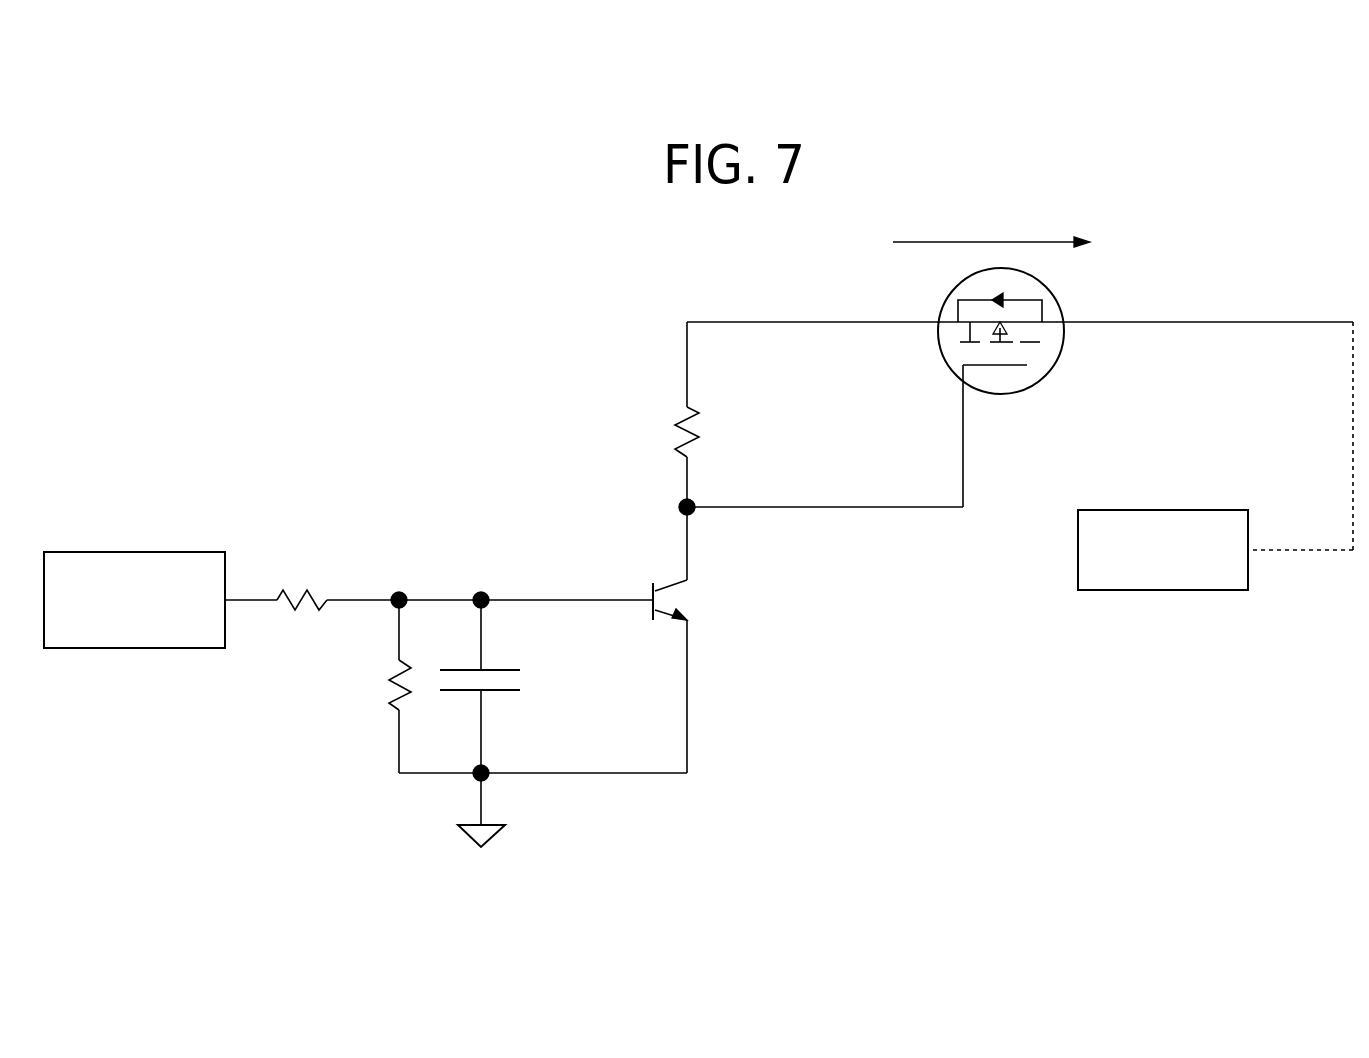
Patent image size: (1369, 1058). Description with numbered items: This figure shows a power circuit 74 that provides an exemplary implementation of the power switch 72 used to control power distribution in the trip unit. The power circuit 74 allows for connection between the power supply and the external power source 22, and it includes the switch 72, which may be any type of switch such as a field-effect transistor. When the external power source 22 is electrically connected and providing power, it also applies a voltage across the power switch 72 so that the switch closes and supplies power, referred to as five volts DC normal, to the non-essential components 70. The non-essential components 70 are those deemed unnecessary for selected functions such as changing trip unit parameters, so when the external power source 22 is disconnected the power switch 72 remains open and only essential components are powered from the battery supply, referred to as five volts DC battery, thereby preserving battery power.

The power circuit 74 is at (598, 241).
The power switch 72 is at (1005, 396).
The non-essential components 70 is at (1168, 592).
The external power source 22 is at (131, 650).